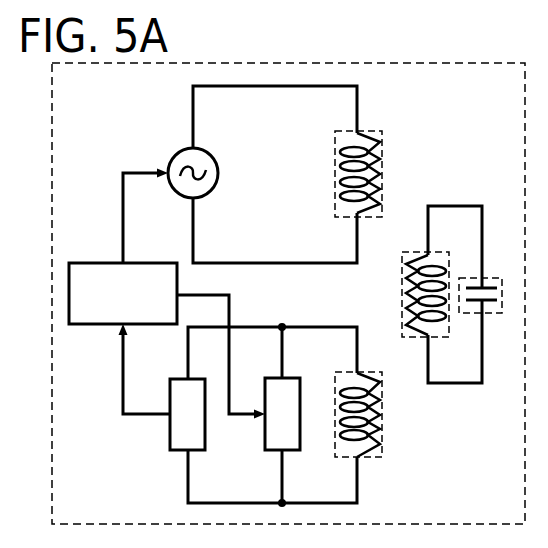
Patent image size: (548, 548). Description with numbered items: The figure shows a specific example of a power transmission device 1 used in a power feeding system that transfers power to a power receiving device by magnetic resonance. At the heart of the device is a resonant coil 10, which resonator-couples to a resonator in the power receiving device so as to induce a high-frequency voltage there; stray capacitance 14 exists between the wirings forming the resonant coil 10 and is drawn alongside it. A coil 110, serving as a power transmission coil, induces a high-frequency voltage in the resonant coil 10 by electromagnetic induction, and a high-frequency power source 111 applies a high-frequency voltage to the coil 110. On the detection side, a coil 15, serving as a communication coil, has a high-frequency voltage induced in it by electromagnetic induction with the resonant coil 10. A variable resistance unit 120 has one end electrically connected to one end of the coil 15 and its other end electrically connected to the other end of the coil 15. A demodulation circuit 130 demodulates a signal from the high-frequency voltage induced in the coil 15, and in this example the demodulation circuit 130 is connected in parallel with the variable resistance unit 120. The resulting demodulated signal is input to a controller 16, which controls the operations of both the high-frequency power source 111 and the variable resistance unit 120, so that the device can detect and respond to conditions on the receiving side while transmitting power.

The power transmission device 1 is at (288, 293).
The resonant coil 10 is at (404, 315).
The stray capacitance 14 is at (491, 276).
The coil (communication coil) 15 is at (368, 458).
The controller 16 is at (123, 293).
The coil (power transmission coil) 110 is at (371, 130).
The high-frequency power source 111 is at (215, 147).
The variable resistance unit 120 is at (293, 452).
The demodulation circuit 130 is at (200, 452).